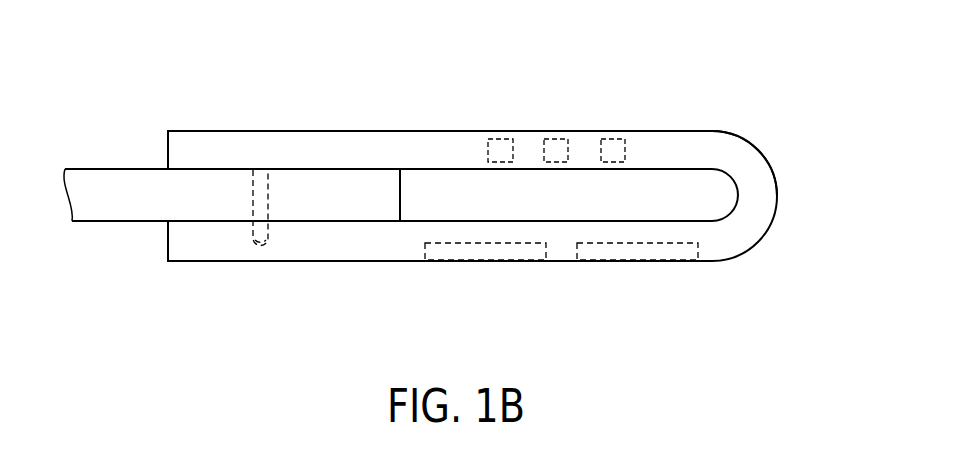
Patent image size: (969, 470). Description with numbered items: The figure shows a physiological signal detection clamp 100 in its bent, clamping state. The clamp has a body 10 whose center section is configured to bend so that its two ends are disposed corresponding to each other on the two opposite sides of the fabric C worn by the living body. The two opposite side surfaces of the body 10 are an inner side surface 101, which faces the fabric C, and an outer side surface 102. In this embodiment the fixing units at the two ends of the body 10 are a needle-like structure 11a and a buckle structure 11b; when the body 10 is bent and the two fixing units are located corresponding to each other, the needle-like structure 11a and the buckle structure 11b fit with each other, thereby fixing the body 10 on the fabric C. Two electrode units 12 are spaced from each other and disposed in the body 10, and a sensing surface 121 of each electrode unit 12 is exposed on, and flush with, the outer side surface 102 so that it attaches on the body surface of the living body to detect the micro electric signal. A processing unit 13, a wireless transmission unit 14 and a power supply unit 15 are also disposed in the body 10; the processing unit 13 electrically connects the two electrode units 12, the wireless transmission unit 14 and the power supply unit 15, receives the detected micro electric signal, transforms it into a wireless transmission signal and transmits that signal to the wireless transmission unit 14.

The physiological signal detection clamp 100 is at (449, 179).
The body 10 is at (501, 213).
The inner side surface 101 is at (680, 220).
The outer side surface 102 is at (330, 262).
The needle-like structure 11a is at (257, 178).
The buckle structure 11b is at (258, 244).
The electrode unit 12 is at (480, 254).
The sensing surface 121 is at (538, 261).
The processing unit 13 is at (503, 139).
The wireless transmission unit 14 is at (558, 139).
The power supply unit 15 is at (615, 139).
The fabric C is at (110, 185).